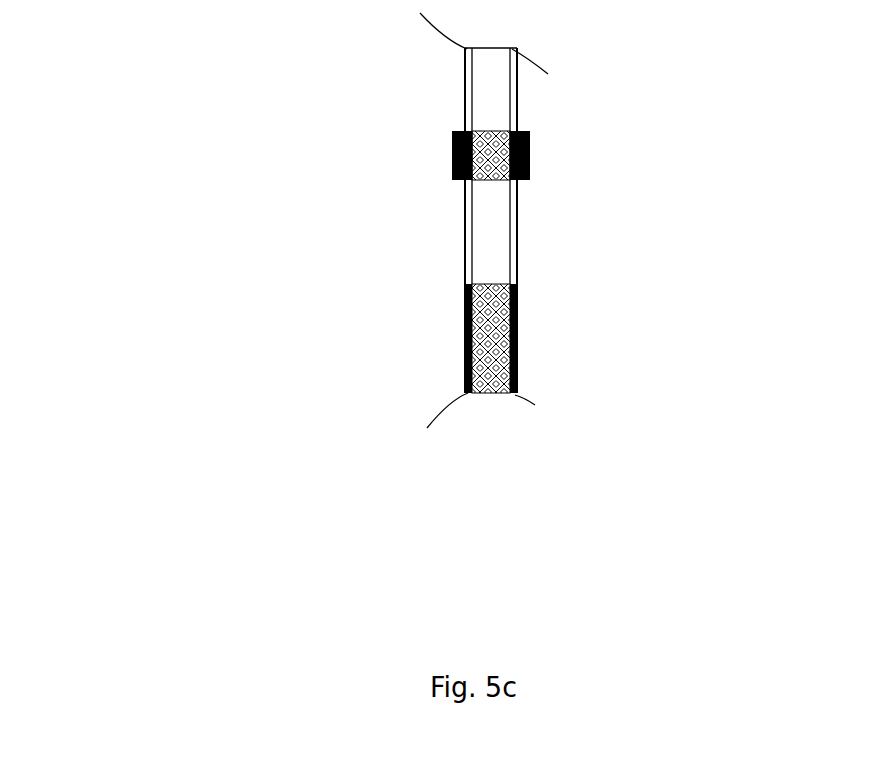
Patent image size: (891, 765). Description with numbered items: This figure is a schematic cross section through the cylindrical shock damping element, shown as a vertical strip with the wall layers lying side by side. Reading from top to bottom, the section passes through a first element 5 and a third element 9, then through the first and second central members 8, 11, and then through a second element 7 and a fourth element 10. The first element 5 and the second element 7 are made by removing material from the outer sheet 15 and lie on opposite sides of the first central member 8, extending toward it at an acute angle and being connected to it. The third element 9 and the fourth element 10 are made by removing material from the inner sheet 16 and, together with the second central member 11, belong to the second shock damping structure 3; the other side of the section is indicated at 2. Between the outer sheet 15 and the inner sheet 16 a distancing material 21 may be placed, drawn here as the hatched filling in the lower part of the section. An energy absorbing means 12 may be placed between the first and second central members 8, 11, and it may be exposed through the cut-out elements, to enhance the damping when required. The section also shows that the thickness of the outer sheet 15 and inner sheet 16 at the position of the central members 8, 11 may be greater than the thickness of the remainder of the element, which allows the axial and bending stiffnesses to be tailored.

The outer side region of tube 2 is at (666, 286).
The second shock damping structure 3 is at (279, 287).
The first element 5 is at (519, 97).
The second element 7 is at (519, 230).
The first central member 8 is at (533, 156).
The third element 9 is at (464, 98).
The fourth element 10 is at (464, 231).
The second central member 11 is at (449, 157).
The energy absorbing means 12 is at (489, 145).
The outer sheet 15 is at (518, 353).
The inner sheet 16 is at (464, 355).
The distancing material 21 is at (497, 364).